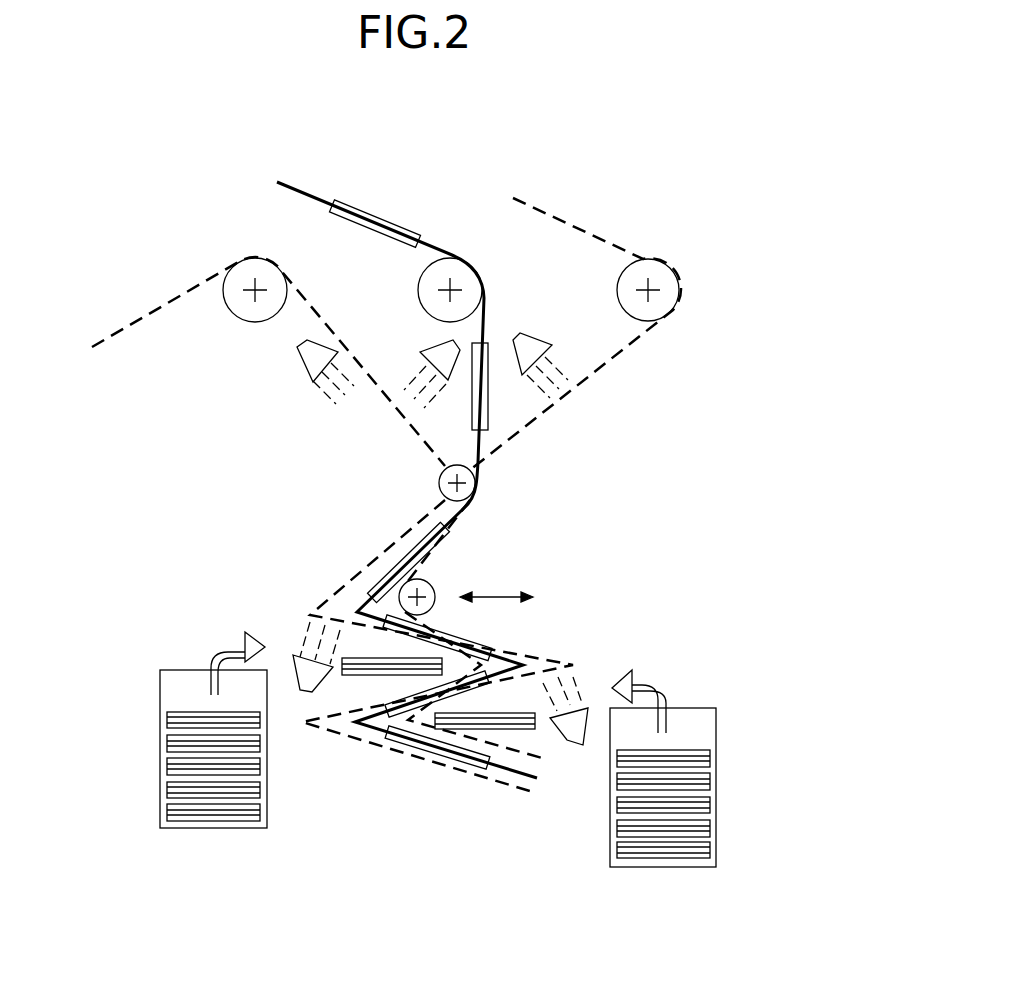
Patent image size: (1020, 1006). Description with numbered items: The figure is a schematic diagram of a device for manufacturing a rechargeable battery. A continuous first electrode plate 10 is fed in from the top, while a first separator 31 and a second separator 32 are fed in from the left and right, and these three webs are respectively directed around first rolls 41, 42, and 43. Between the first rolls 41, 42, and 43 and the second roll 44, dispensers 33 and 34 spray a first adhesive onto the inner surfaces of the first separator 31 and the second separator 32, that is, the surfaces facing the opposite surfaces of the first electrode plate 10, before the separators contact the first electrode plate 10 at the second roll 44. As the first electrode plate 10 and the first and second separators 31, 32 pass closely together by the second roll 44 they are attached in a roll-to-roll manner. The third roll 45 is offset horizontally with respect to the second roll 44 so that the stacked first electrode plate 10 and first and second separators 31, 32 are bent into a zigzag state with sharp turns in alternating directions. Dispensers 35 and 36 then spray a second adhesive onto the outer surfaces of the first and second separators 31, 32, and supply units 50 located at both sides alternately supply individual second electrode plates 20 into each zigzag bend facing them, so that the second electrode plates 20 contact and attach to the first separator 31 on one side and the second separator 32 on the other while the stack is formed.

The first electrode plate 10 is at (310, 193).
The second electrode plate 20 is at (352, 676).
The first separator 31 is at (172, 300).
The second separator 32 is at (590, 228).
The dispenser 33 is at (437, 343).
The dispenser 34 is at (533, 338).
The dispenser 35 is at (304, 695).
The dispenser 36 is at (582, 748).
The first roll 41 is at (418, 278).
The first roll 42 is at (254, 322).
The first roll 43 is at (617, 288).
The second roll 44 is at (439, 483).
The third roll 45 is at (430, 582).
The supply unit 50 is at (160, 692).